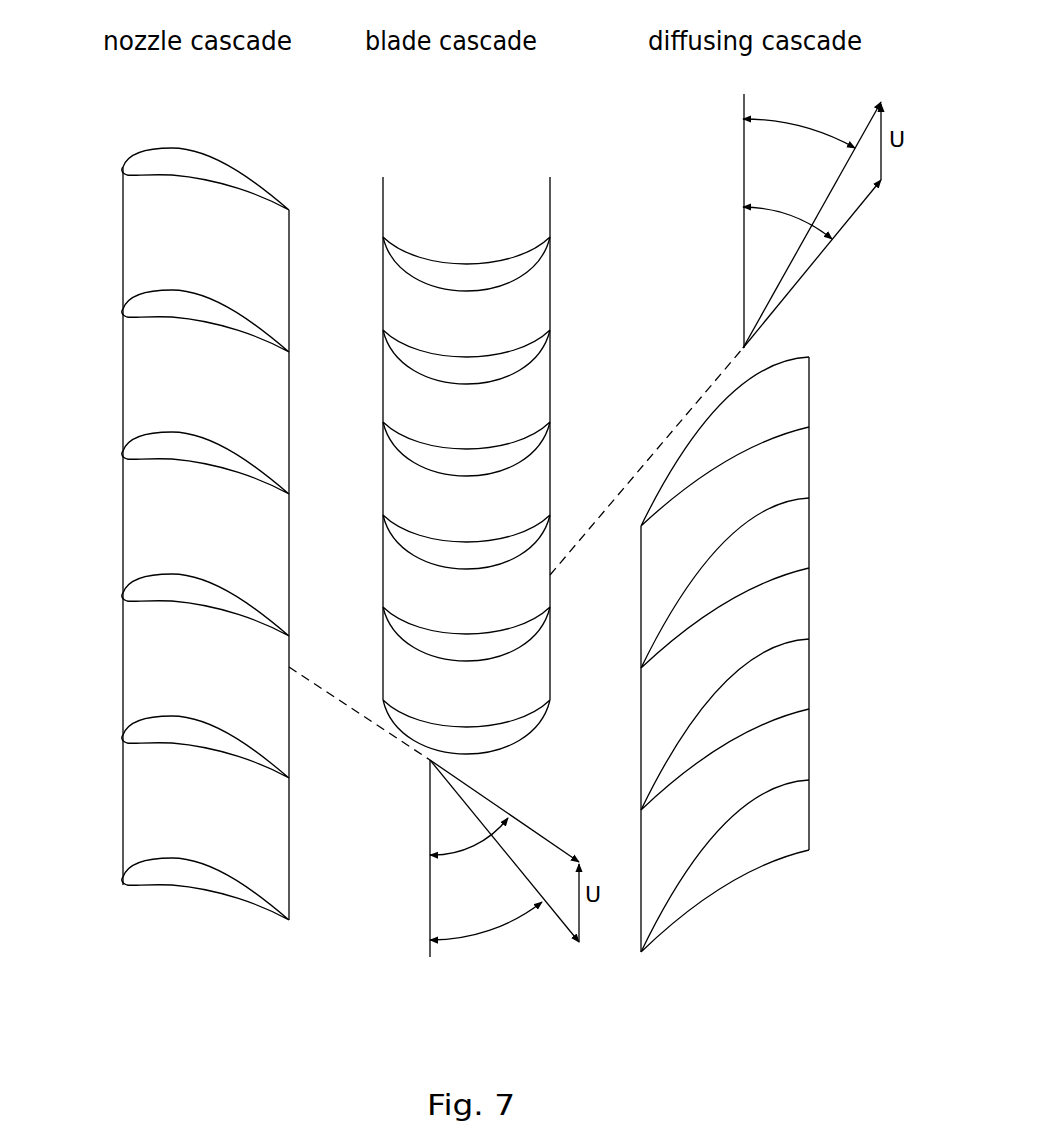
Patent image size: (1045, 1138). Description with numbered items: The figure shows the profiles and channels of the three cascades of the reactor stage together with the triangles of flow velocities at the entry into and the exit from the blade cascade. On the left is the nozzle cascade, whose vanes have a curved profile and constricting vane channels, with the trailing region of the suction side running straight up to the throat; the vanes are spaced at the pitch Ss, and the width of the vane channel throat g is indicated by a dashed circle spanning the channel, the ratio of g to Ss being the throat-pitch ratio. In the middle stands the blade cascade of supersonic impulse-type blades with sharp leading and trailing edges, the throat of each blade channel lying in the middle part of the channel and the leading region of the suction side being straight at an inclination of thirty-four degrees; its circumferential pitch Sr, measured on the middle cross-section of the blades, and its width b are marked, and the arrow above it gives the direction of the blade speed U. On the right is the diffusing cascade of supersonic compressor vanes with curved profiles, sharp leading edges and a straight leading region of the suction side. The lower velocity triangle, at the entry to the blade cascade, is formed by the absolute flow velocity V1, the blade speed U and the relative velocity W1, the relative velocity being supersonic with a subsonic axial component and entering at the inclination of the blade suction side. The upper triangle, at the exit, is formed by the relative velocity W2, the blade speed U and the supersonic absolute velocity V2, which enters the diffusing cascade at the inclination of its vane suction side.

The nozzle vane cascade pitch Ss is at (123, 309).
The circumferential pitch of the blade cascade Sr is at (383, 330).
The width of the blade cascade b is at (547, 207).
The width of the vane channel throat g is at (287, 355).
The blade speed U is at (468, 79).
The absolute velocity of the flow at the entry V1 is at (515, 811).
The flow velocity relative to blade at the entry W1 is at (518, 868).
The absolute velocity of flow at the exit V2 is at (822, 212).
The flow velocity relative to blade at the exit W2 is at (830, 264).